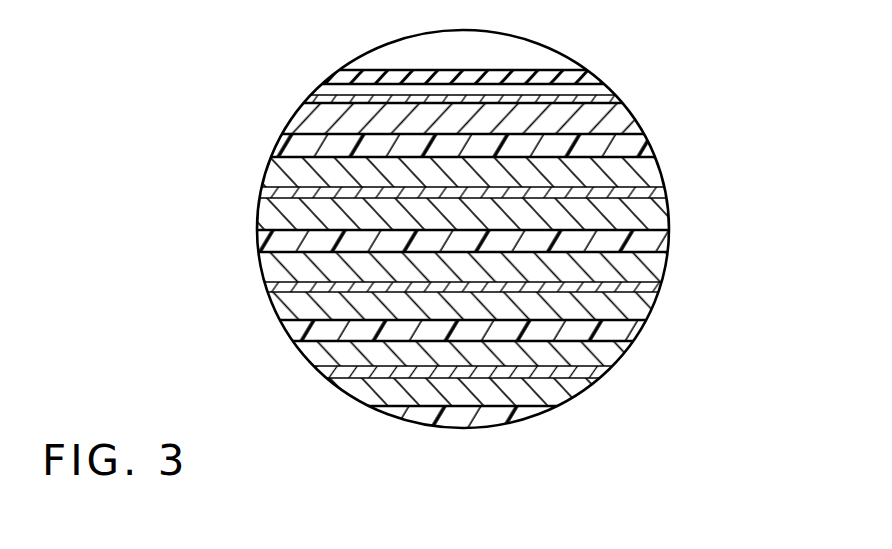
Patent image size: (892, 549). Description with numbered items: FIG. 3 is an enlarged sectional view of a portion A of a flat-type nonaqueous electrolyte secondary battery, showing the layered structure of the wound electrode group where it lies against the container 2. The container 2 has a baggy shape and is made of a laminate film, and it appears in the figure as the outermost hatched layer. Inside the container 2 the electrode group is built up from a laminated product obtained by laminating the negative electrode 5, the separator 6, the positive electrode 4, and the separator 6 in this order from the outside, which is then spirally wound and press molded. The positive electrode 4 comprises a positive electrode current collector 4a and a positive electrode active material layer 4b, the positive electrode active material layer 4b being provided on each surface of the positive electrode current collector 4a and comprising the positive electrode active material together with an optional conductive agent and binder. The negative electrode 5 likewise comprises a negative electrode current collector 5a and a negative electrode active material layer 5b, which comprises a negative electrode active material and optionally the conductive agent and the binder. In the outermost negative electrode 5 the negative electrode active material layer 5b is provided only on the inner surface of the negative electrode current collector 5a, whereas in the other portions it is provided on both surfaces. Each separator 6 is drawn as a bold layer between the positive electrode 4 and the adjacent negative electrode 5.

The portion A is at (373, 70).
The container 2 is at (590, 79).
The positive electrode 4 is at (504, 298).
The positive electrode current collector 4a is at (630, 192).
The positive electrode active material layer 4b is at (633, 172).
The negative electrode 5 is at (505, 203).
The negative electrode current collector 5a is at (607, 101).
The negative electrode active material layer 5b is at (610, 122).
The separator 6 is at (287, 150).